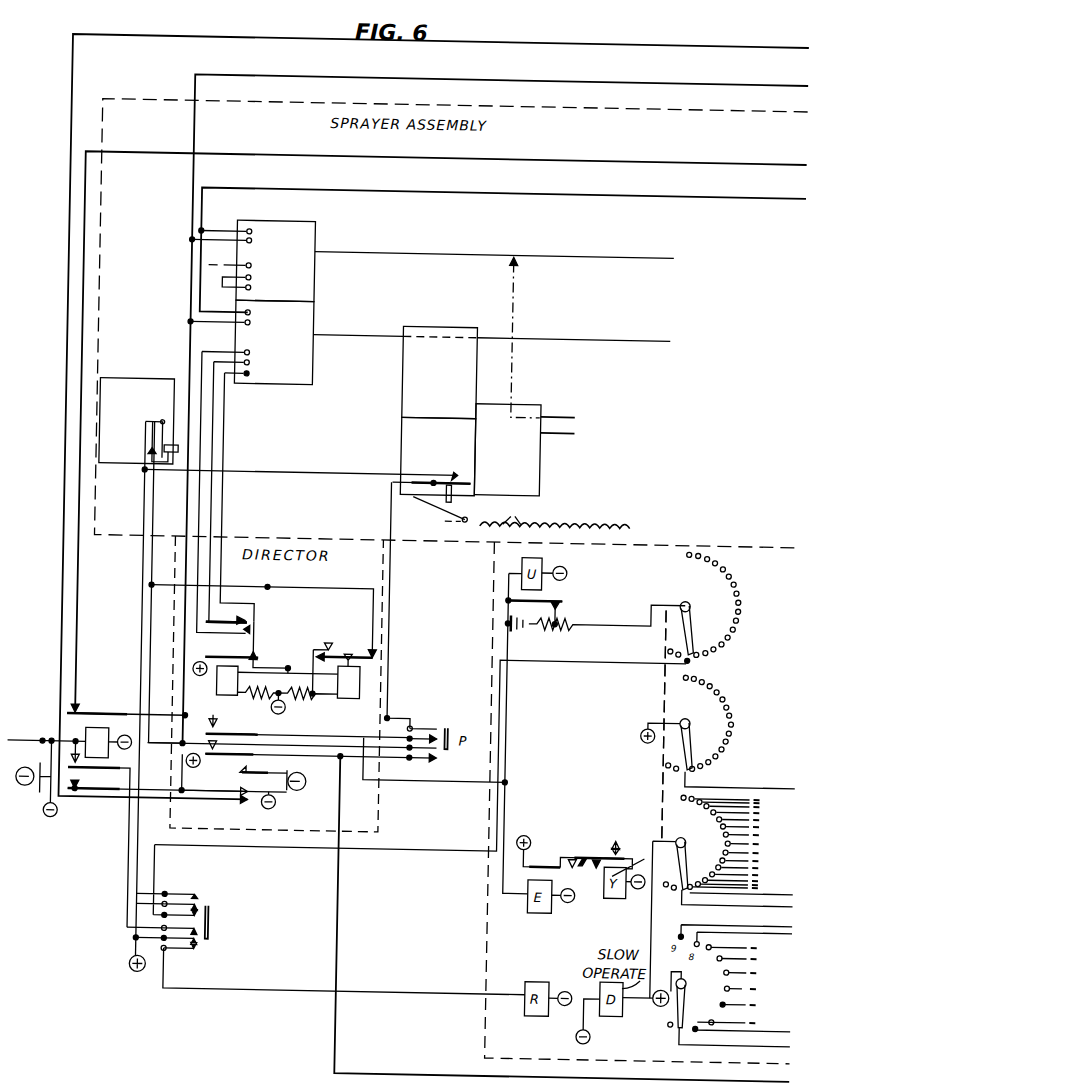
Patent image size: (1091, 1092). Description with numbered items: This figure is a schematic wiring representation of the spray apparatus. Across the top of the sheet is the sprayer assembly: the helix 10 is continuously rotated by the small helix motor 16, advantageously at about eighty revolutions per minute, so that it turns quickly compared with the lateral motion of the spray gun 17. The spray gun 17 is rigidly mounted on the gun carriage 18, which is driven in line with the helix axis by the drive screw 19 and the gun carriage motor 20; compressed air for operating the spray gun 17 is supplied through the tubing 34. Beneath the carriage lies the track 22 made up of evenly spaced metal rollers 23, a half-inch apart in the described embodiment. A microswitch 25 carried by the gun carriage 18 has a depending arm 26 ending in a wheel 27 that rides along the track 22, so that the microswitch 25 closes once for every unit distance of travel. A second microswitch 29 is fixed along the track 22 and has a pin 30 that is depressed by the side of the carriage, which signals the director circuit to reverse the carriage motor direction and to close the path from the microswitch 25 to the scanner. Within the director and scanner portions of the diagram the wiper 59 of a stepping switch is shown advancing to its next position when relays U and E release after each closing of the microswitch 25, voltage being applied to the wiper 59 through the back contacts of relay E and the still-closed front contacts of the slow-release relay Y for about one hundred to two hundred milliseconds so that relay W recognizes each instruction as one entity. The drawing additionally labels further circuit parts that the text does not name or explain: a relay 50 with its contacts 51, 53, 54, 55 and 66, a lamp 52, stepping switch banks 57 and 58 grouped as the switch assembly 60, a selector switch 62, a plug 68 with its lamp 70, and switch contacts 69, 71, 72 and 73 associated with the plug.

The helix 10 is at (414, 249).
The helix motor 16 is at (318, 278).
The spray gun 17 is at (546, 458).
The gun carriage 18 is at (478, 350).
The drive screw 19 is at (372, 340).
The gun carriage motor 20 is at (322, 346).
The track 22 is at (636, 518).
The rollers 23 is at (508, 511).
The microswitch 25 is at (448, 470).
The depending arm 26 is at (436, 500).
The wheel 27 is at (473, 516).
The second microswitch 29 is at (158, 448).
The pin 30 is at (186, 447).
The tubing 34 is at (576, 406).
The relay R 50 is at (216, 898).
The relay contact 51 is at (246, 619).
The indicator lamp 52 is at (320, 782).
The relay contact 53 is at (290, 768).
The relay contacts 54 is at (230, 733).
The relay contact 55 is at (268, 652).
The stepping switch 57 is at (704, 610).
The stepping switch 58 is at (706, 728).
The wiper 59 is at (708, 840).
The stepping switch assembly 60 is at (666, 698).
The selector switch 62 is at (706, 998).
The relay contact 66 is at (201, 731).
The plug 68 is at (42, 740).
The switch contact 69 is at (86, 766).
The pilot lamp 70 is at (41, 787).
The switch contact 71 is at (96, 708).
The switch contact 72 is at (94, 790).
The switch contact 73 is at (262, 797).